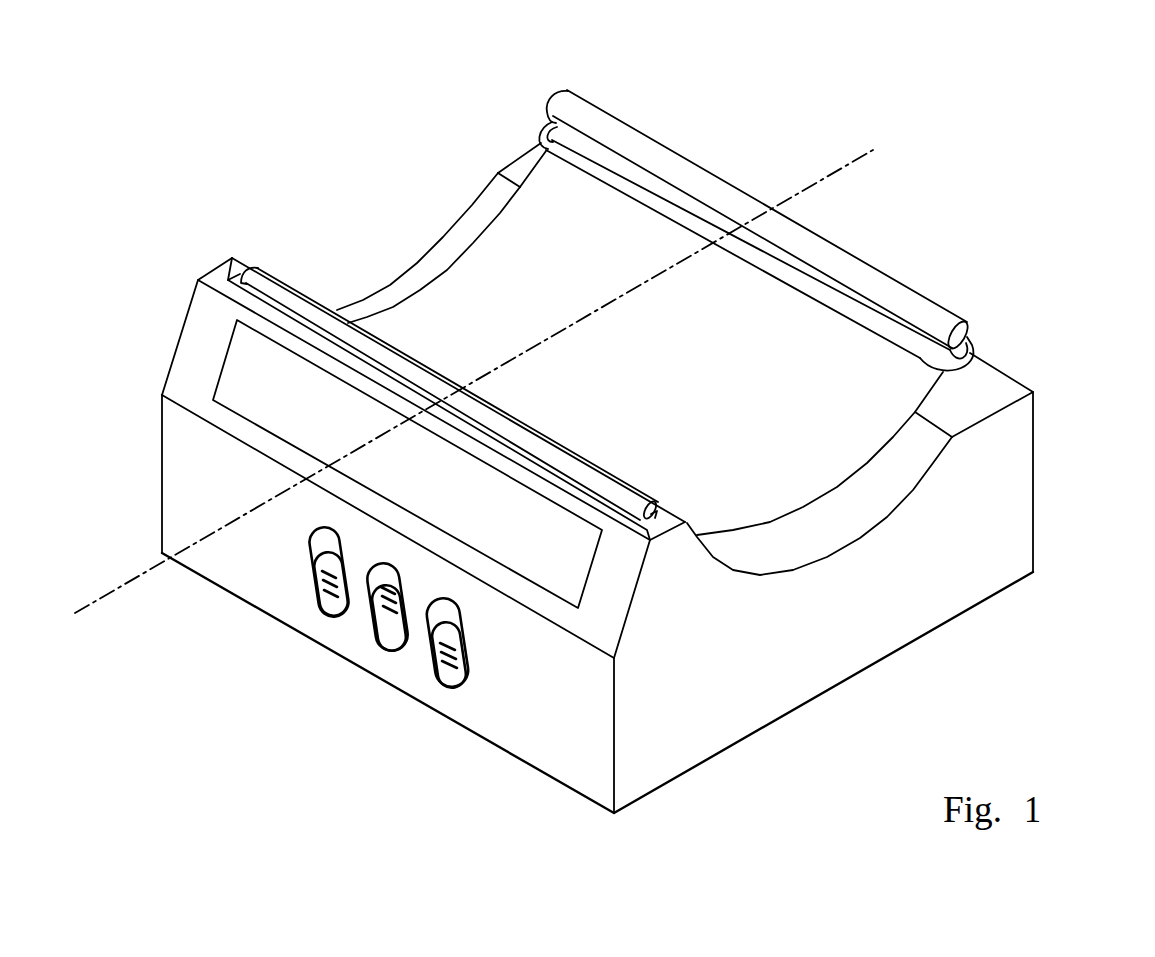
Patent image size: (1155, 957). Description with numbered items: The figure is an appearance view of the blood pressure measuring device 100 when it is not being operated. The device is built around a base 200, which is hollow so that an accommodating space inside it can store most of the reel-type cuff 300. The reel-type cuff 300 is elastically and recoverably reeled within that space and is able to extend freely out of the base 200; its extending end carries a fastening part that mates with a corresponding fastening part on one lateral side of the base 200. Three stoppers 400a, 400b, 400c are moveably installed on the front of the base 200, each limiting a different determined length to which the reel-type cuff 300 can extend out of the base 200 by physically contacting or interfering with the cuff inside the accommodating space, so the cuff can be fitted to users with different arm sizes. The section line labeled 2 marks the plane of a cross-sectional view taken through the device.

The blood pressure measuring device 100 is at (1108, 109).
The base 200 is at (1036, 518).
The reel-type cuff 300 is at (633, 130).
The stopper 400a is at (330, 603).
The stopper 400b is at (390, 617).
The stopper 400c is at (447, 670).
The section line 2- 2 is at (105, 593).